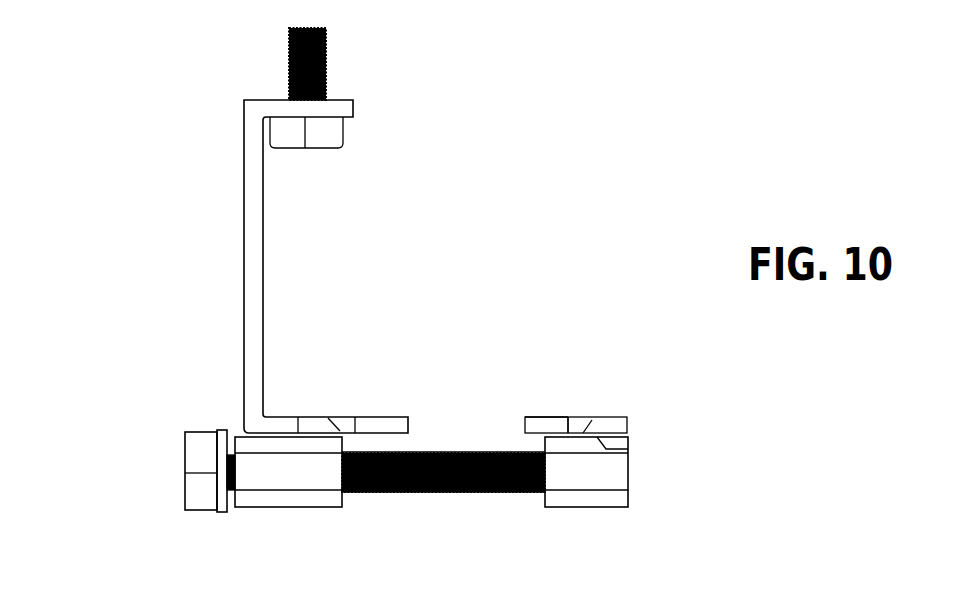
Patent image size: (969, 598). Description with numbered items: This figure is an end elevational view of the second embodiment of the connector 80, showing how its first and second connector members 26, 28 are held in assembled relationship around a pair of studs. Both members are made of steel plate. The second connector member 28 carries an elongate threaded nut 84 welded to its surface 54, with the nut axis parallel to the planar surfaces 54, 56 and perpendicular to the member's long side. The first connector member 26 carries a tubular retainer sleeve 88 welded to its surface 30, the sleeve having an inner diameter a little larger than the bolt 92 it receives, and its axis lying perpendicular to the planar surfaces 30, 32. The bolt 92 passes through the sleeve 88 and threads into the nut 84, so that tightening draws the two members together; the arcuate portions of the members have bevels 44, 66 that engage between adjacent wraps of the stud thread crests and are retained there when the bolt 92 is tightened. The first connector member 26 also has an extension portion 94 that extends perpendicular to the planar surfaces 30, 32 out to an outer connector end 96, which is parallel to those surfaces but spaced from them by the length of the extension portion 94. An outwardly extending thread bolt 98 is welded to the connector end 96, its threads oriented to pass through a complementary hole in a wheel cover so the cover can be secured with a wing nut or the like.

The connector 80 is at (573, 127).
The extension portion 94 is at (242, 258).
The outer connector end 96 is at (335, 97).
The thread bolt 98 is at (285, 58).
The planar surface 32 is at (282, 413).
The bevel 44 is at (343, 425).
The first connector member 26 is at (467, 338).
The second connector member 28 is at (618, 413).
The planar surface 56 is at (542, 415).
The bevel 66 is at (577, 417).
The tubular retainer sleeve 88 is at (238, 436).
The planar surface 30 is at (317, 437).
The planar surface 54 is at (606, 449).
The bolt 92 is at (182, 461).
The elongate threaded nut 84 is at (598, 507).